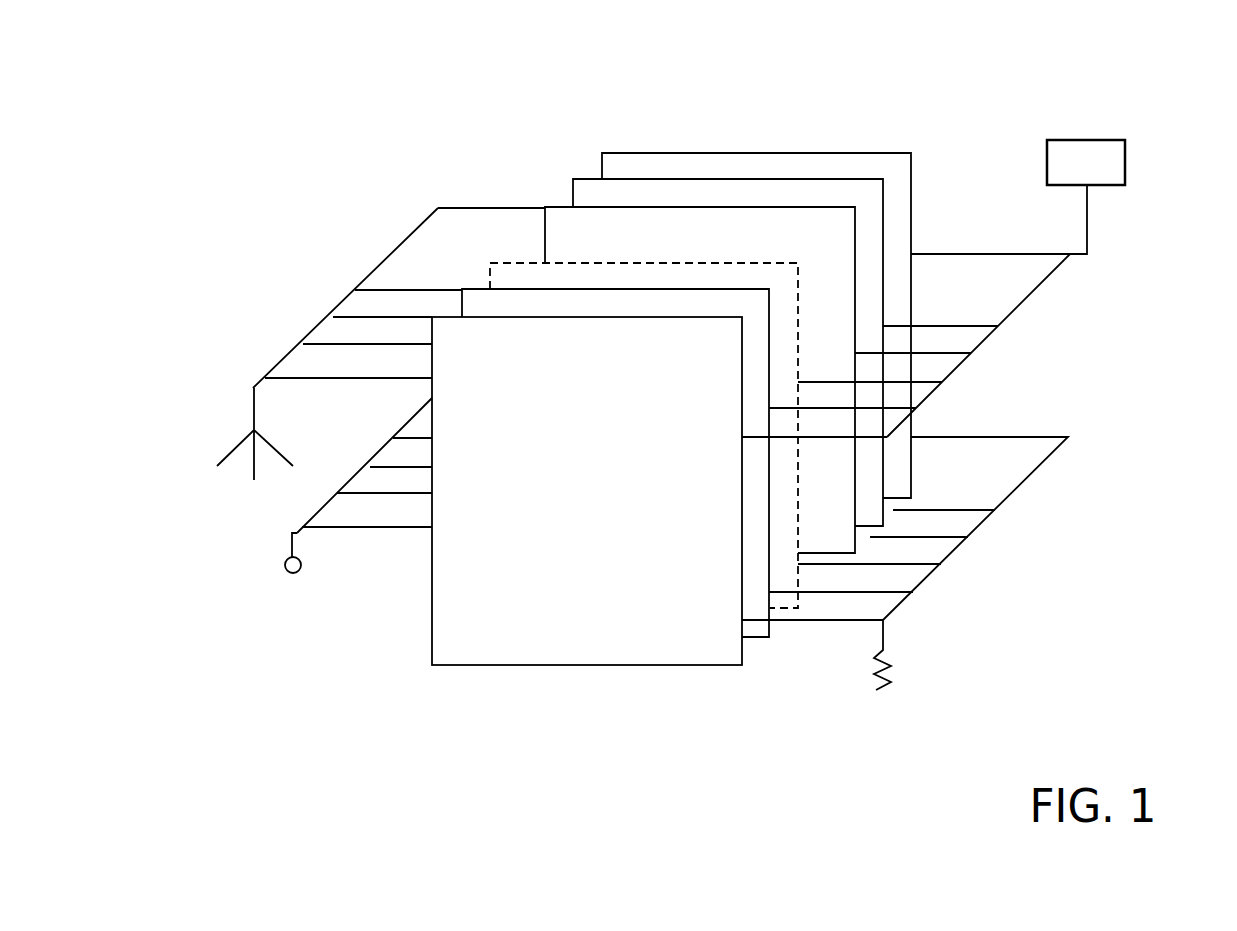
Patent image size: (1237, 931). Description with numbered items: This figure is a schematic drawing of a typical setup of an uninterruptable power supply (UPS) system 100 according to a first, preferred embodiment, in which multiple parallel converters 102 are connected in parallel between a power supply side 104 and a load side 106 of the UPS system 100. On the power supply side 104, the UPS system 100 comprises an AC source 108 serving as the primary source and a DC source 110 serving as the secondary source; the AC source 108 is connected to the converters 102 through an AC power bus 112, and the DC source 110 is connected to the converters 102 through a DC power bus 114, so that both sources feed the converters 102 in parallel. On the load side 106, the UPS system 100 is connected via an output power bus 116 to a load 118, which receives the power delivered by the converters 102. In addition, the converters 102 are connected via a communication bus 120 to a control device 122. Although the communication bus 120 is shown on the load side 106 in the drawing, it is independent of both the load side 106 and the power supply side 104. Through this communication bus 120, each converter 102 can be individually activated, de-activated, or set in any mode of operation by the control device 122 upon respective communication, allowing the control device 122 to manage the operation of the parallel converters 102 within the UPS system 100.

The uninterruptable power supply (UPS) system 100 is at (357, 117).
The converter 102 is at (697, 240).
The power supply side 104 is at (548, 130).
The load side 106 is at (963, 119).
The AC source 108 is at (258, 440).
The DC source 110 is at (292, 573).
The AC power bus 112 is at (438, 208).
The DC power bus 114 is at (372, 462).
The output power bus 116 is at (988, 517).
The load 118 is at (878, 683).
The communication bus 120 is at (1002, 327).
The control device 122 is at (1080, 160).